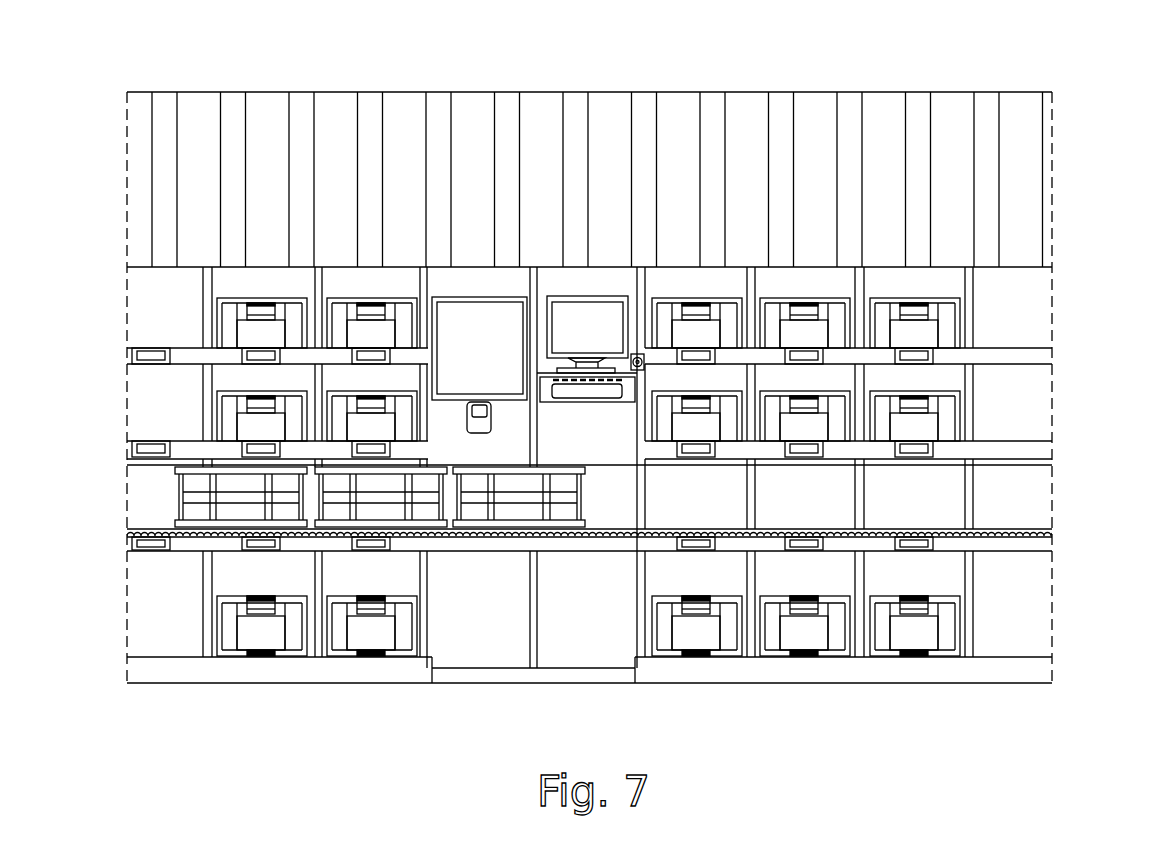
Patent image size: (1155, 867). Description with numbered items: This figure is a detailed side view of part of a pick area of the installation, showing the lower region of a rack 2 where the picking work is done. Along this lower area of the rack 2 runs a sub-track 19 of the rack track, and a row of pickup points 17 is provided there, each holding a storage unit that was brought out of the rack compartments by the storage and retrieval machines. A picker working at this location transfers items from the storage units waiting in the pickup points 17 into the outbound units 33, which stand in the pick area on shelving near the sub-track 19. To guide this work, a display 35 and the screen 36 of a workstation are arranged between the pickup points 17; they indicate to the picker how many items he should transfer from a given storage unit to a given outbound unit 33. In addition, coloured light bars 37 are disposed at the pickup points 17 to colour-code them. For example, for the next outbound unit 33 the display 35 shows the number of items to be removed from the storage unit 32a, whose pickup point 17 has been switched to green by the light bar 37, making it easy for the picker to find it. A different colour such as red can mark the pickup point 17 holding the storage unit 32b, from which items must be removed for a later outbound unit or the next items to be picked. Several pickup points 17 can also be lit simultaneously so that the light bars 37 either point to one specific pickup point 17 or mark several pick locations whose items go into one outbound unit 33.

The rack 2 is at (676, 130).
The pickup point 17 is at (1058, 338).
The sub-track 19 is at (585, 540).
The storage unit 32a is at (142, 320).
The storage unit 32b is at (367, 306).
The outbound unit 33 is at (498, 497).
The display 35 is at (463, 323).
The screen 36 is at (607, 297).
The light bar 37 is at (148, 354).